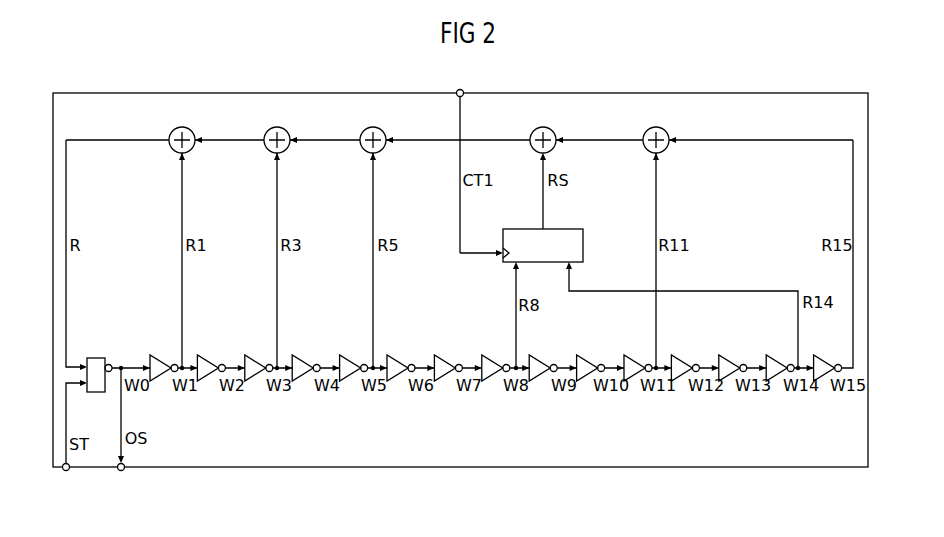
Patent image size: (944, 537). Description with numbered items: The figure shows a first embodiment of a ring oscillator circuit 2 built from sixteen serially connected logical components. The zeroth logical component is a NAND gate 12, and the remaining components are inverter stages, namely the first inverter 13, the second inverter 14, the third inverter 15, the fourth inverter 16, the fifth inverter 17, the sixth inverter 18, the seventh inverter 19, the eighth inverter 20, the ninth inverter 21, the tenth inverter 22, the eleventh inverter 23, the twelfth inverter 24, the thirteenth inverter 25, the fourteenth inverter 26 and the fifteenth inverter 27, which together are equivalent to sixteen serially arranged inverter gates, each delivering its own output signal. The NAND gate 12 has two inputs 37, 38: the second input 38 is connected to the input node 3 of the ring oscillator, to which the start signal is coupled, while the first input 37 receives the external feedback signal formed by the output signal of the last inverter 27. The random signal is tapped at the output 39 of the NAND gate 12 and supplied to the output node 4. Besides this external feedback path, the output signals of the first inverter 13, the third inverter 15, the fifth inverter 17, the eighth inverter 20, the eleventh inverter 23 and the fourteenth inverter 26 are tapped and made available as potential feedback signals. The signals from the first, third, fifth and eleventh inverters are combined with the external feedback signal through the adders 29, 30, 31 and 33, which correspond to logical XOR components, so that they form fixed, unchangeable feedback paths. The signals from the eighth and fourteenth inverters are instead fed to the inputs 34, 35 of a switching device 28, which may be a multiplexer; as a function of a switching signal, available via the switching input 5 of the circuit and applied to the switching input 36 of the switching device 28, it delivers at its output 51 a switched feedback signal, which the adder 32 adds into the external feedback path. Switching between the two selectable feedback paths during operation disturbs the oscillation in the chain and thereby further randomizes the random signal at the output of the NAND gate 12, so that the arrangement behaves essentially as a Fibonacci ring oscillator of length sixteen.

The ring oscillator circuit 2 is at (484, 468).
The input node 3 is at (66, 471).
The output node 4 is at (121, 471).
The switching input 5 is at (463, 91).
The NAND gate 12 is at (98, 358).
The first inverter 13 is at (157, 356).
The inverter 14 is at (204, 356).
The third inverter 15 is at (252, 356).
The inverter 16 is at (299, 356).
The inverter 17 is at (347, 356).
The inverter 18 is at (394, 356).
The inverter 19 is at (441, 356).
The eighth inverter 20 is at (489, 356).
The inverter 21 is at (536, 356).
The inverter 22 is at (584, 356).
The eleventh inverter 23 is at (631, 356).
The inverter 24 is at (678, 356).
The inverter 25 is at (726, 356).
The fourteenth inverter 26 is at (773, 356).
The fifteenth inverter 27 is at (821, 356).
The switching device 28 is at (583, 247).
The adder 29 is at (191, 131).
The adder 30 is at (286, 131).
The adder 31 is at (382, 131).
The adder 32 is at (552, 131).
The adder 33 is at (665, 131).
The input of switching device 34 is at (512, 265).
The input of switching device 35 is at (574, 266).
The switching input of multiplexer 36 is at (502, 250).
The first input of NAND gate 37 is at (80, 364).
The second input of NAND gate 38 is at (80, 386).
The output of NAND gate 39 is at (110, 364).
The output of switching device 51 is at (548, 229).